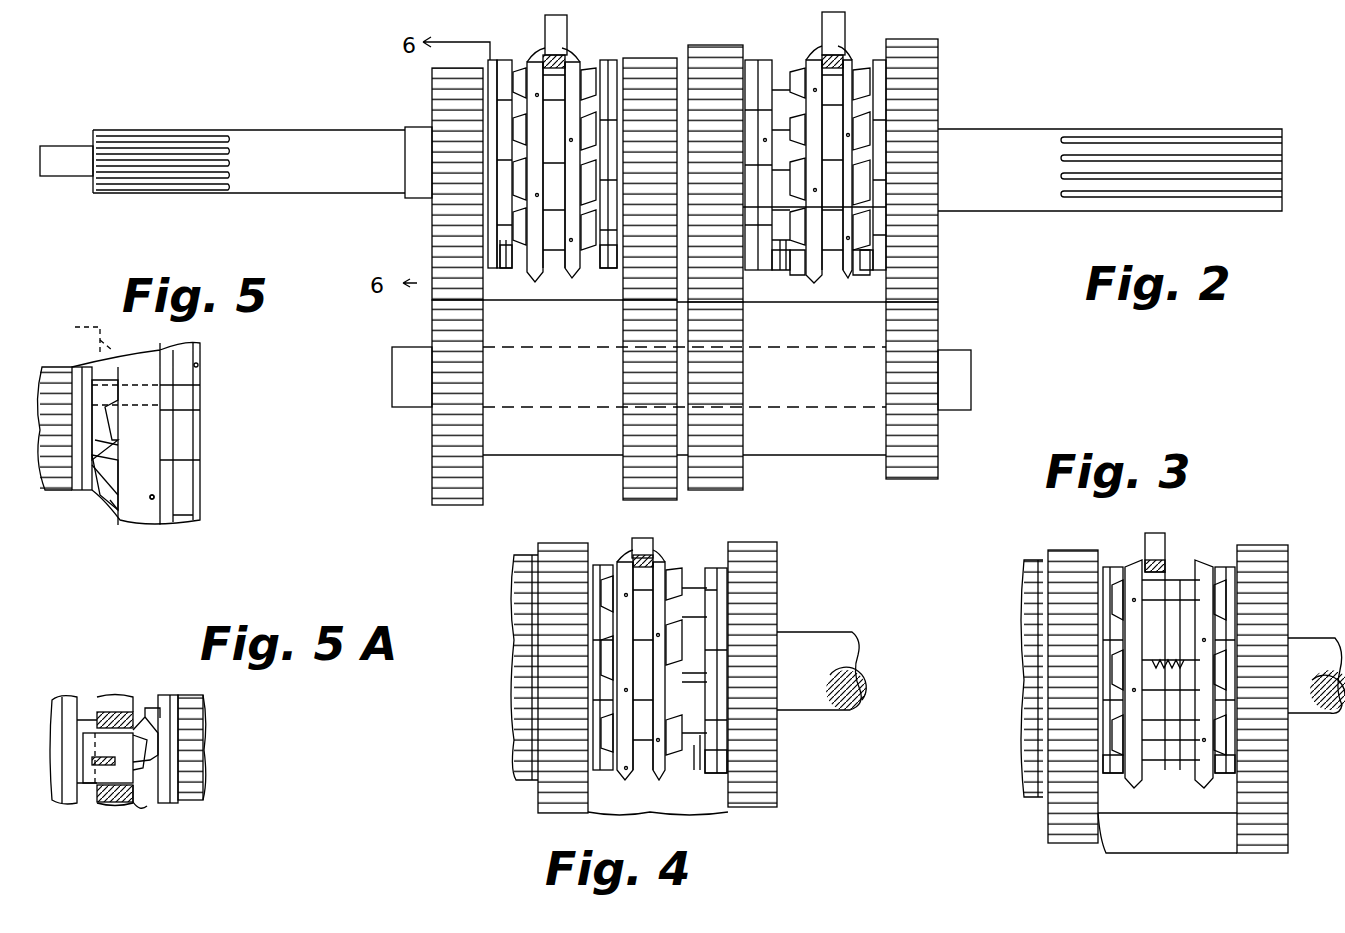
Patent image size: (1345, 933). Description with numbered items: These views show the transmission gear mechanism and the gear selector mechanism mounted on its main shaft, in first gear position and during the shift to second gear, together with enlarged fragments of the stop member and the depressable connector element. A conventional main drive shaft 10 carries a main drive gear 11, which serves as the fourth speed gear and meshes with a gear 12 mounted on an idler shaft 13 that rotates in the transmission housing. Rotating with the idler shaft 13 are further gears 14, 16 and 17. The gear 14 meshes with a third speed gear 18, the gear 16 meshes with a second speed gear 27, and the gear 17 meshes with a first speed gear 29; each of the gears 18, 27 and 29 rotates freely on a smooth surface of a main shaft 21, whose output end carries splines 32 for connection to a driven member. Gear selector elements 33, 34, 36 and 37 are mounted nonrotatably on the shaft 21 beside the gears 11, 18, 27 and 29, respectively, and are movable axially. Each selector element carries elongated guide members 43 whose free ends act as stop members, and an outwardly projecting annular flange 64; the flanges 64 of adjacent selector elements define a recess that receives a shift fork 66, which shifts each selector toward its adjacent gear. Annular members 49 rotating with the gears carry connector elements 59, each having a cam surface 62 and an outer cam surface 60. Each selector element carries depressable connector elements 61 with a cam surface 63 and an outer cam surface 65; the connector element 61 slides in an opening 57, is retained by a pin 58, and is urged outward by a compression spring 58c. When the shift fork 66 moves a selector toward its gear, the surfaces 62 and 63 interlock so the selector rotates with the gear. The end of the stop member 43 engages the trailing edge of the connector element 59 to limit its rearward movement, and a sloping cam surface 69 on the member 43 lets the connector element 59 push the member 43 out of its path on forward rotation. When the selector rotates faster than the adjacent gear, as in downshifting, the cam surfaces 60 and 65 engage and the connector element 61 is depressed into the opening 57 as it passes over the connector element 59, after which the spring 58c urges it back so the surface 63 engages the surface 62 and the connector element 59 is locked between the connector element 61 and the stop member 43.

In FIG. 2, the main drive shaft 10 is at (316, 124).
In FIG. 2, the main drive gear 11 is at (432, 215).
In FIG. 2, the gear 12 is at (432, 470).
In FIG. 2, the idler shaft 13 is at (392, 375).
In FIG. 2, the gear 14 is at (625, 455).
In FIG. 2, the gear 16 is at (742, 450).
In FIG. 2, the gear 17 is at (938, 460).
In FIG. 2, the third speed gear 18 is at (628, 62).
In FIG. 4, the third speed gear 18 is at (513, 582).
In FIG. 3, the third speed gear 18 is at (1024, 585).
In FIG. 2, the main shaft 21 is at (1048, 130).
In FIG. 4, the main shaft 21 is at (811, 630).
In FIG. 3, the main shaft 21 is at (1317, 712).
In FIG. 2, the second speed gear 27 is at (712, 50).
In FIG. 4, the second speed gear 27 is at (548, 548).
In FIG. 3, the second speed gear 27 is at (1050, 548).
In FIG. 5, the second speed gear 27 is at (58, 367).
In FIG. 2, the first speed gear 29 is at (930, 138).
In FIG. 4, the first speed gear 29 is at (776, 545).
In FIG. 3, the first speed gear 29 is at (1275, 578).
In FIG. 5A, the first speed gear 29 is at (200, 730).
In FIG. 2, the splines 32 is at (1198, 130).
In FIG. 2, the gear selector element 33 is at (527, 175).
In FIG. 2, the gear selector element 34 is at (841, 175).
In FIG. 4, the gear selector element 36 is at (648, 658).
In FIG. 3, the gear selector element 36 is at (1155, 662).
In FIG. 2, the gear selector element 37 is at (851, 284).
In FIG. 4, the gear selector element 37 is at (670, 778).
In FIG. 3, the gear selector element 37 is at (1206, 779).
In FIG. 5, the elongated guide member 43 is at (205, 350).
In FIG. 3, the annular member 49 is at (1220, 790).
In FIG. 5A, the opening 57 is at (95, 700).
In FIG. 5, the pin 58 is at (155, 500).
In FIG. 5A, the pin 58 is at (90, 762).
In FIG. 5A, the compression spring 58c is at (105, 765).
In FIG. 4, the connector element 59 is at (707, 568).
In FIG. 5, the connector element 59 is at (103, 325).
In FIG. 5A, the connector element 59 is at (148, 730).
In FIG. 5, the cam surface 60 is at (110, 365).
In FIG. 5A, the cam surface 60 is at (143, 712).
In FIG. 5, the connector element 61 is at (116, 472).
In FIG. 5A, the connector element 61 is at (83, 781).
In FIG. 5, the cam surface 62 is at (105, 495).
In FIG. 5A, the cam surface 62 is at (160, 768).
In FIG. 2, the cam surface 63 is at (804, 170).
In FIG. 3, the cam surface 63 is at (1168, 664).
In FIG. 5, the cam surface 63 is at (105, 450).
In FIG. 5A, the cam surface 63 is at (130, 712).
In FIG. 4, the annular flange 64 is at (625, 560).
In FIG. 3, the annular flange 64 is at (1141, 562).
In FIG. 5, the cam surface 65 is at (110, 510).
In FIG. 5A, the cam surface 65 is at (145, 808).
In FIG. 4, the shift fork 66 is at (652, 538).
In FIG. 3, the shift fork 66 is at (1171, 532).
In FIG. 5, the sloping cam surface 69 is at (95, 395).